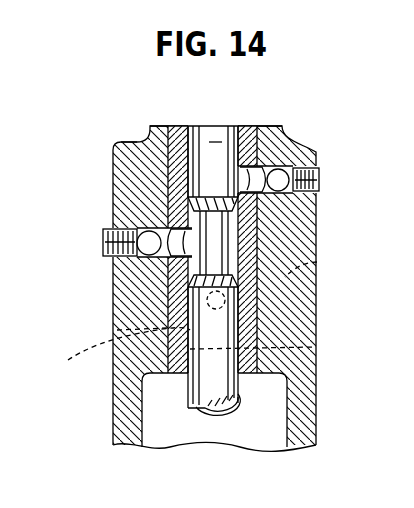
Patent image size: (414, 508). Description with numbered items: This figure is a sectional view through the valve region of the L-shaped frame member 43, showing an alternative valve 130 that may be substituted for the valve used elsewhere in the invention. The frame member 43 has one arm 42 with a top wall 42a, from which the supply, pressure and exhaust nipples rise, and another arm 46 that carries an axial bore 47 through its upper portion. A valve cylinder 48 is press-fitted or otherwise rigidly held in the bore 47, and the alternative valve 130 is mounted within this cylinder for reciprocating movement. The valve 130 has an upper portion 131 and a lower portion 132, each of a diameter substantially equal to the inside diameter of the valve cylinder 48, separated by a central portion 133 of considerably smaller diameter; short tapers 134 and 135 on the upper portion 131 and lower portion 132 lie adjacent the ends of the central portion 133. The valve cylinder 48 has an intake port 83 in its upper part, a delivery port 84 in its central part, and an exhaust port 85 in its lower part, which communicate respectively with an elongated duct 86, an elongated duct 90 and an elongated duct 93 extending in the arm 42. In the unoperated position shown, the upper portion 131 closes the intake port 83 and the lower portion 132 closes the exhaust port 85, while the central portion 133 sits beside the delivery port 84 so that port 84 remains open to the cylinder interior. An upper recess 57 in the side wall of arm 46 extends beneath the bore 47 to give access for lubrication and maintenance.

The arm 42 is at (316, 326).
The wall of arm 42a is at (124, 142).
The L-shaped frame member 43 is at (320, 303).
The other arm of the L-shaped frame member 46 is at (318, 403).
The axial bore 47 is at (246, 166).
The valve cylinder 48 is at (180, 126).
The upper recess 57 is at (268, 428).
The intake port 83 is at (253, 163).
The delivery port 84 is at (172, 254).
The exhaust port 85 is at (317, 262).
The elongated duct 86 is at (283, 171).
The elongated duct 90 is at (165, 257).
The elongated duct 93 is at (114, 351).
The alternative valve 130 is at (207, 118).
The upper portion 131 is at (210, 160).
The lower portion 132 is at (212, 387).
The central portion 133 is at (206, 221).
The taper 134 is at (186, 198).
The taper 135 is at (170, 283).